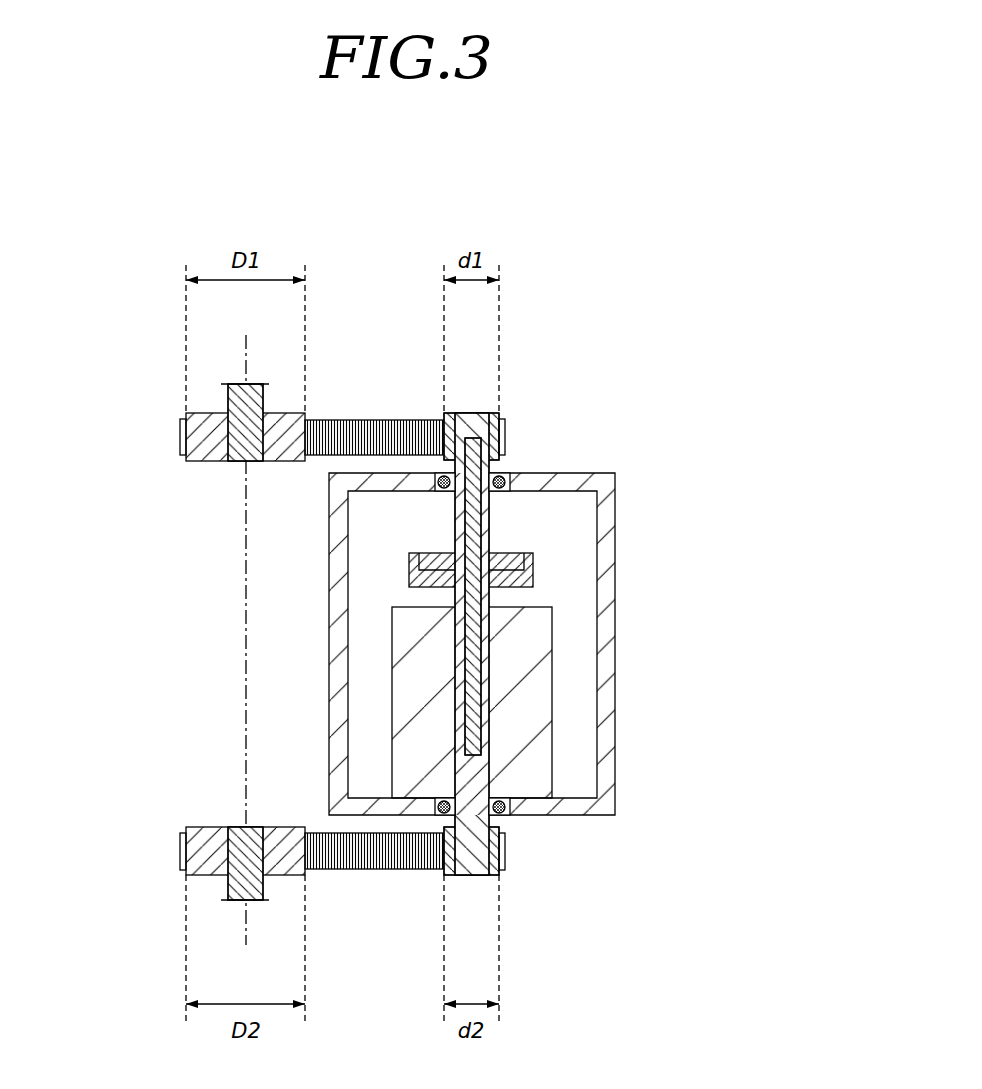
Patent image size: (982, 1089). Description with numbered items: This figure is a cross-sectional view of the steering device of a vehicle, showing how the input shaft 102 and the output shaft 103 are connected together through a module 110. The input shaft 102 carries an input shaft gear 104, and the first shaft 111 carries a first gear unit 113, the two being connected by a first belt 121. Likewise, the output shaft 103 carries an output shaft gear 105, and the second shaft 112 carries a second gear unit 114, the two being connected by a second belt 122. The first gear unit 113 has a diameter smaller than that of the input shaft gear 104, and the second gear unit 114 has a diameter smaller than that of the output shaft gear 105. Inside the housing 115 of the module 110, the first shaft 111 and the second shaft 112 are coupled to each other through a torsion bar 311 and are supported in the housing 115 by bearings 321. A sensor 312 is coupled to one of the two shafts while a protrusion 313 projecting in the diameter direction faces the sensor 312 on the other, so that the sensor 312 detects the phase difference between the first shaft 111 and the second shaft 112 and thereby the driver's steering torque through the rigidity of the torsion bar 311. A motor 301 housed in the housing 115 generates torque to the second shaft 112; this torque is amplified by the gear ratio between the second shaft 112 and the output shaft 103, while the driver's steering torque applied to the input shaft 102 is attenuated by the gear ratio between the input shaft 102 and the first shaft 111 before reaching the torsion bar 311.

The input shaft 102 is at (228, 397).
The output shaft 103 is at (228, 888).
The input shaft gear 104 is at (197, 435).
The output shaft gear 105 is at (203, 852).
The module 110 is at (548, 640).
The first shaft 111 is at (475, 417).
The second shaft 112 is at (473, 860).
The first gear unit 113 is at (500, 430).
The second gear unit 114 is at (502, 857).
The housing 115 is at (612, 605).
The first belt 121 is at (368, 422).
The second belt 122 is at (360, 863).
The motor 301 is at (540, 720).
The torsion bar 311 is at (475, 727).
The sensor 312 is at (505, 590).
The protrusion 313 is at (525, 562).
The bearings 321 is at (510, 485).